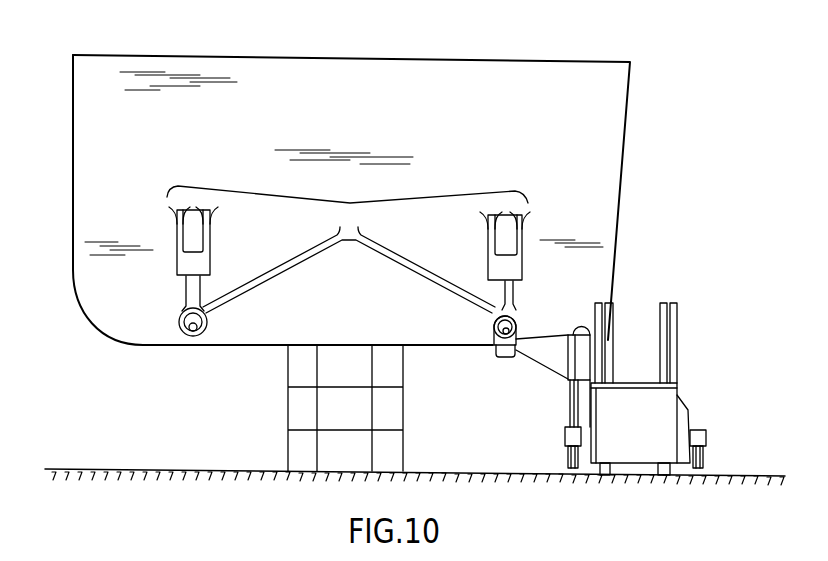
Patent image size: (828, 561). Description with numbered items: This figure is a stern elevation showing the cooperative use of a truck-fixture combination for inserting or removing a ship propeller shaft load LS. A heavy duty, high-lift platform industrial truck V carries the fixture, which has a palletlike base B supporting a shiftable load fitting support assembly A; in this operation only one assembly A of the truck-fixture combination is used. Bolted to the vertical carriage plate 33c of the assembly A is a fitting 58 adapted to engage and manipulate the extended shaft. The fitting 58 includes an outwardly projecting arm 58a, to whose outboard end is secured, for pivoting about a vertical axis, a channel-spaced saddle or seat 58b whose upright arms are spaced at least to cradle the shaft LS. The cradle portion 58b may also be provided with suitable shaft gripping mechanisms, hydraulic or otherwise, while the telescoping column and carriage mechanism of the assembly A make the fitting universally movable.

The ship propeller shaft load LS is at (497, 320).
The fitting 58 is at (497, 341).
The outwardly projecting arm 58a is at (524, 368).
The channel-spaced saddle or seat 58b is at (494, 340).
The mounting plate on carriage 33c is at (588, 351).
The load fitting support assembly A is at (564, 399).
The high-lift platform industrial truck V is at (644, 433).
The palletlike base B is at (697, 430).